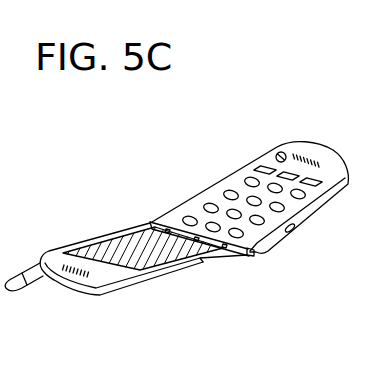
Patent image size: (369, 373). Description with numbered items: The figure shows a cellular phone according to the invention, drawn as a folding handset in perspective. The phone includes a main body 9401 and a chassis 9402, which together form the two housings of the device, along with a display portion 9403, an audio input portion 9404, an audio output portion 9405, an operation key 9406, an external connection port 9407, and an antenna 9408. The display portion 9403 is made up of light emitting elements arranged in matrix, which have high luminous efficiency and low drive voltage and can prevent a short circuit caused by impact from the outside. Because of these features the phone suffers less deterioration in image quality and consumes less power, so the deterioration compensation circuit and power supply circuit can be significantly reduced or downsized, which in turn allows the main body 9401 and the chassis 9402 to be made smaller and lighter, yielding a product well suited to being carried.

The main body 9401 is at (225, 198).
The chassis 9402 is at (147, 277).
The display portion 9403 is at (163, 263).
The audio input portion 9404 is at (278, 132).
The audio output portion 9405 is at (103, 311).
The operation key 9406 is at (227, 171).
The external connection port 9407 is at (326, 249).
The antenna 9408 is at (36, 300).